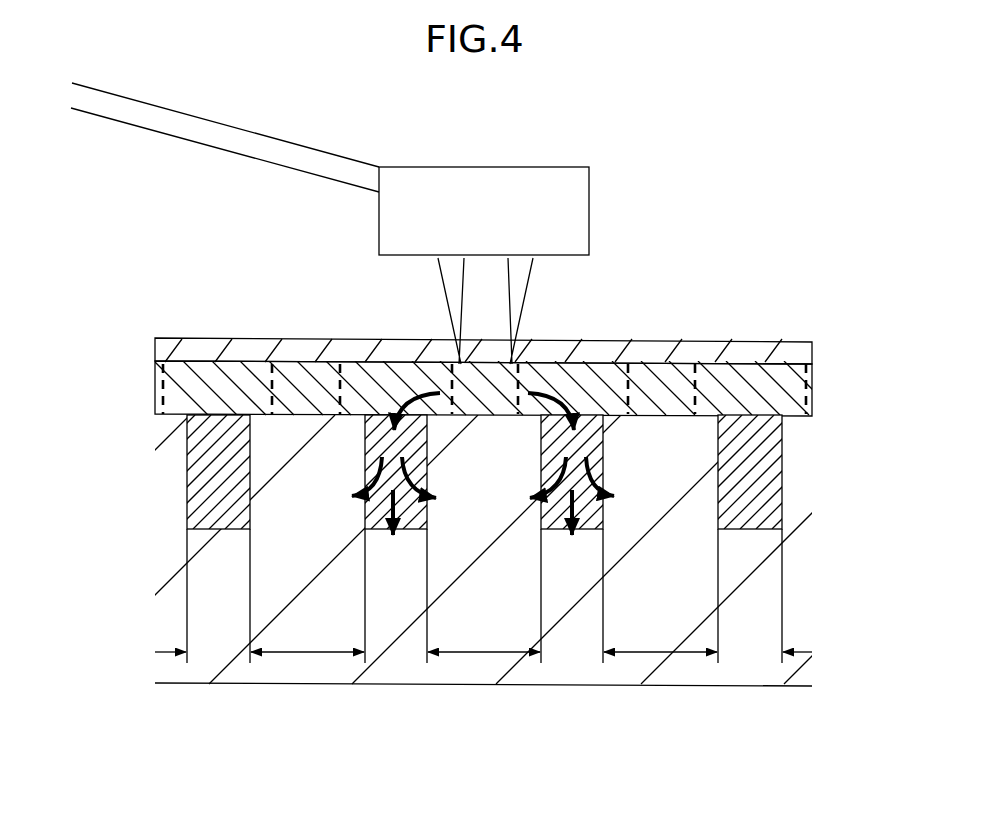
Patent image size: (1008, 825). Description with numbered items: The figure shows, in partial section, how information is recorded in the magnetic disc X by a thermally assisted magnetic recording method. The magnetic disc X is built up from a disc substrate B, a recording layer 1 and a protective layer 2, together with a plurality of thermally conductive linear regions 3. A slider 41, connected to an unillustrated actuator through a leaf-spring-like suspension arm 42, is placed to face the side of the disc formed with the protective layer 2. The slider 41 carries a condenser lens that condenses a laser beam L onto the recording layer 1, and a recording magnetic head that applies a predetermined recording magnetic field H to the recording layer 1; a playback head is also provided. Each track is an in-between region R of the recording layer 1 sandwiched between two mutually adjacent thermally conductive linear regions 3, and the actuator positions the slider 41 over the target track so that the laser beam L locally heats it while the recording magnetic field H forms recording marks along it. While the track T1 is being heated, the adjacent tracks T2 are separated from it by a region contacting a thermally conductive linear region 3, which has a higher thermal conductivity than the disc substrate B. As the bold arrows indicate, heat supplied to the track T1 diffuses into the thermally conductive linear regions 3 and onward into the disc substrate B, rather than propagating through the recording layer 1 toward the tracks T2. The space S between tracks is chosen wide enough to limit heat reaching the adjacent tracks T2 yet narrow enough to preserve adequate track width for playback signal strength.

The suspension arm 42 is at (149, 119).
The slider 41 is at (574, 186).
The recording magnetic field H is at (462, 278).
The laser beam L is at (537, 273).
The magnetic disc X is at (152, 324).
The protective layer 2 is at (660, 352).
The recording layer 1 is at (753, 382).
The space S is at (221, 370).
The thermally conductive linear regions 3 is at (200, 480).
The disc substrate B is at (240, 668).
The track T1 is at (500, 400).
The adjacent tracks T2 is at (294, 402).
The in-between region R is at (483, 639).